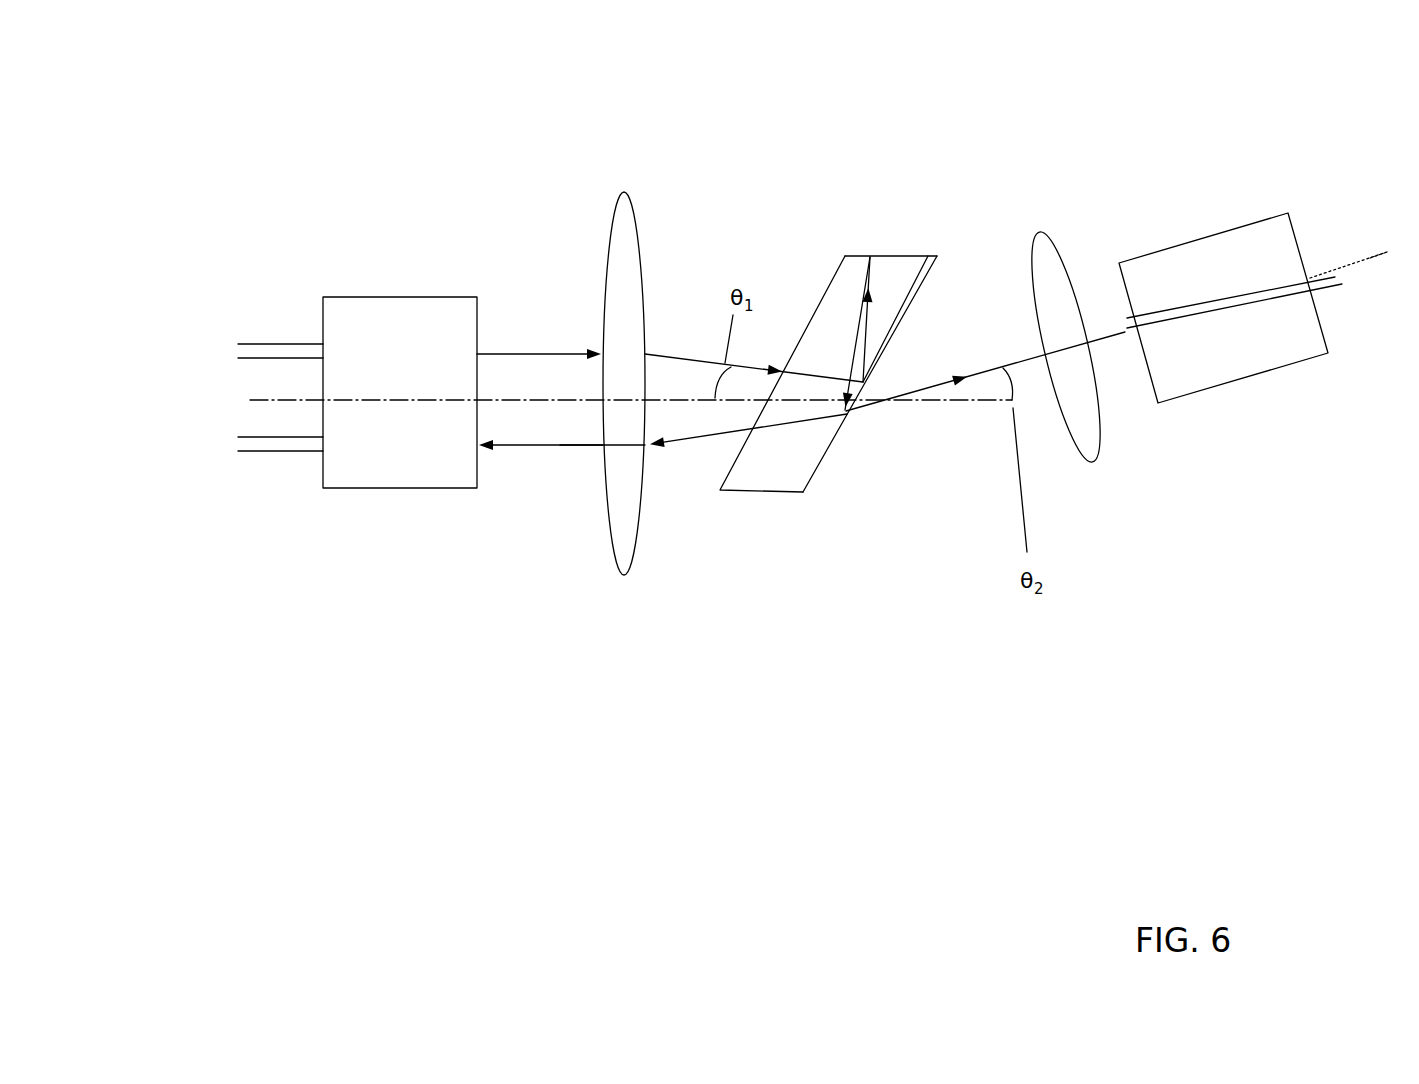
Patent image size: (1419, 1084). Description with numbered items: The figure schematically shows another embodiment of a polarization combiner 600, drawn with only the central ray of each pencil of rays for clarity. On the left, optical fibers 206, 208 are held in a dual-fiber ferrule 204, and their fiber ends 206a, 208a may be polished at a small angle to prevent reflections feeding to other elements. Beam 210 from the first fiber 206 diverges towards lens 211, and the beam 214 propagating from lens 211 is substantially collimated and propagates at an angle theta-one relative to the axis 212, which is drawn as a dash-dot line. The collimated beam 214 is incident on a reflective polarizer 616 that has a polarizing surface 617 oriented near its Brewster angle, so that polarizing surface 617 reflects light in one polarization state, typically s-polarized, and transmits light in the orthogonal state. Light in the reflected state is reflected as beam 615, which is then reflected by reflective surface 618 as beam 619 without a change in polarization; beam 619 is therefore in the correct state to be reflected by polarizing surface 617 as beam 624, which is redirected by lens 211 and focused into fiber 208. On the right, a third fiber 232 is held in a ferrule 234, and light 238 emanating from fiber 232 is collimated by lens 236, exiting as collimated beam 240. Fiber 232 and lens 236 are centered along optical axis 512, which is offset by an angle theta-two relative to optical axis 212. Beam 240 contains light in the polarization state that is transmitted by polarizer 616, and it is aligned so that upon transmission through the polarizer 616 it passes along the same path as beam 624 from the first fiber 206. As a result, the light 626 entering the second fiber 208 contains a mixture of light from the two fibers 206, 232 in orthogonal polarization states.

The polarization combiner 600 is at (240, 248).
The dual-fiber ferrule 204 is at (387, 490).
The first fiber 206 is at (253, 358).
The second fiber 208 is at (260, 451).
The axis 212 is at (272, 400).
The fiber end 206a is at (485, 274).
The fiber end 208a is at (490, 575).
The light entering the second fiber 626 is at (543, 445).
The beam 210 is at (572, 357).
The lens 211 is at (625, 192).
The collimated beam 214 is at (700, 367).
The beam 624 is at (696, 442).
The beam 615 is at (928, 256).
The reflective polarizer 616 is at (846, 254).
The polarizing surface 617 is at (943, 277).
The reflective surface 618 is at (895, 256).
The beam 619 is at (855, 353).
The collimated beam 240 is at (978, 375).
The lens 236 is at (1087, 463).
The light 238 is at (1110, 337).
The ferrule 234 is at (1263, 373).
The third fiber 232 is at (1313, 268).
The optical axis 512 is at (1368, 263).